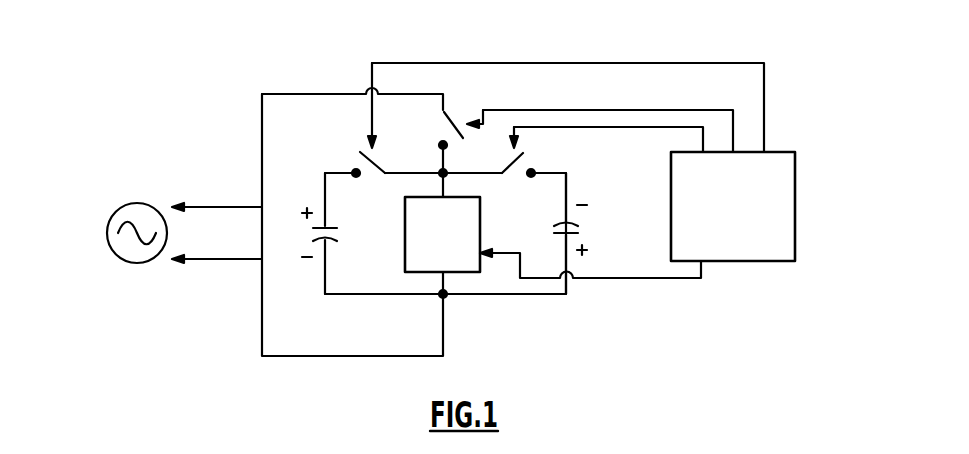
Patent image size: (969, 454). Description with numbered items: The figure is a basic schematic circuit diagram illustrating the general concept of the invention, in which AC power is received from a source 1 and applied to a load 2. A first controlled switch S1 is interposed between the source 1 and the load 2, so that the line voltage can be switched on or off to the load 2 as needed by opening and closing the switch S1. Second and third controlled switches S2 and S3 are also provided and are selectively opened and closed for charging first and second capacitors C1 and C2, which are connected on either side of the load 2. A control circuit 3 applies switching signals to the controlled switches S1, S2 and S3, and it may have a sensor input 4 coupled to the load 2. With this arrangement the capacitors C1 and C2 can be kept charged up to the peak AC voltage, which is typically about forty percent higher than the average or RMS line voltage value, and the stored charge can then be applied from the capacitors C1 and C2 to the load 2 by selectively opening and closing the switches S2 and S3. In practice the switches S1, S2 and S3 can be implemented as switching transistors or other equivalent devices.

The source 1 is at (156, 204).
The load 2 is at (403, 256).
The control circuit 3 is at (753, 249).
The sensor input 4 is at (507, 262).
The first controlled switch S1 is at (453, 112).
The second controlled switch S2 is at (356, 154).
The third controlled switch S3 is at (544, 156).
The first capacitor C1 is at (311, 235).
The second capacitor C2 is at (580, 231).